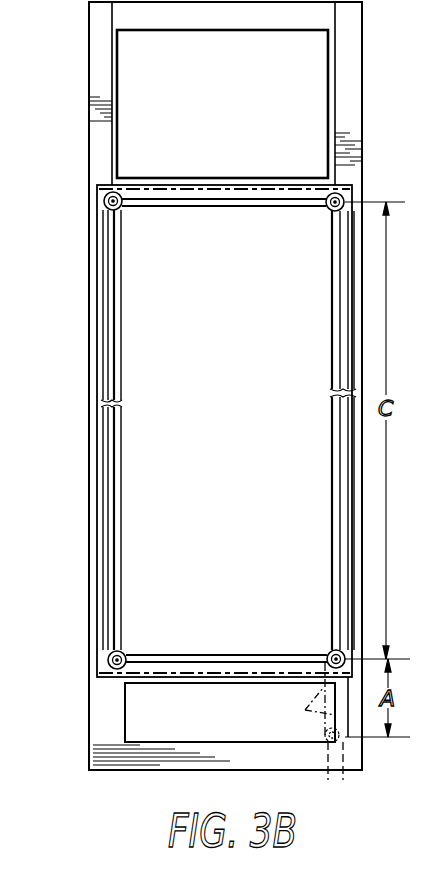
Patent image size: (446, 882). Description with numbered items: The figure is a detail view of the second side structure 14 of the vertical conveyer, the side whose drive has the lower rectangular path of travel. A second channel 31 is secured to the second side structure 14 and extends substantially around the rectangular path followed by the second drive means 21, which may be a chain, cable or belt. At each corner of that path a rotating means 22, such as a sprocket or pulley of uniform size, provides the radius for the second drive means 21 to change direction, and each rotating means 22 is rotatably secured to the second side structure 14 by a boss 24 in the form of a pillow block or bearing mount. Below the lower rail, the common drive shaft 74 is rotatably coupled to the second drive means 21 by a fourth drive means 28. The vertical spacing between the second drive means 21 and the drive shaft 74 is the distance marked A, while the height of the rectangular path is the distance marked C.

The second side structure 14 is at (89, 150).
The second drive means 21 is at (103, 222).
The rotating means 22 is at (117, 223).
The boss 24 is at (122, 210).
The fourth drive means 28 is at (305, 710).
The second channel 31 is at (227, 182).
The drive shaft 74 is at (326, 775).